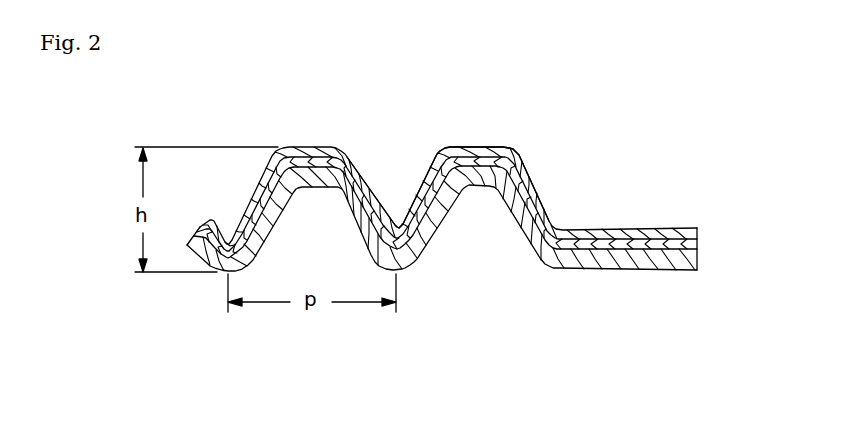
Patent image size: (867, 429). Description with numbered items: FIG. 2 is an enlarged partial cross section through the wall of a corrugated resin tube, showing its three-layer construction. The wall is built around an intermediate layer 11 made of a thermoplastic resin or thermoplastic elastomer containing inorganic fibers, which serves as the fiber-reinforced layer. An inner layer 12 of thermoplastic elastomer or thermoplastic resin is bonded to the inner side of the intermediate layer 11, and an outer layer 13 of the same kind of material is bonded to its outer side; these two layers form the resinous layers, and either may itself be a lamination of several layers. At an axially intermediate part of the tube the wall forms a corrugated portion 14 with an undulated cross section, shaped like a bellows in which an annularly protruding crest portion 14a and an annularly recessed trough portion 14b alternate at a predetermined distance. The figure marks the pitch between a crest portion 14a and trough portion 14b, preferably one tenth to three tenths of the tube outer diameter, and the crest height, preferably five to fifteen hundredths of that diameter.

The intermediate layer 11 is at (698, 243).
The inner layer 12 is at (700, 263).
The outer layer 13 is at (698, 232).
The corrugated portion 14 is at (465, 113).
The crest portion 14a is at (473, 145).
The trough portion 14b is at (397, 227).